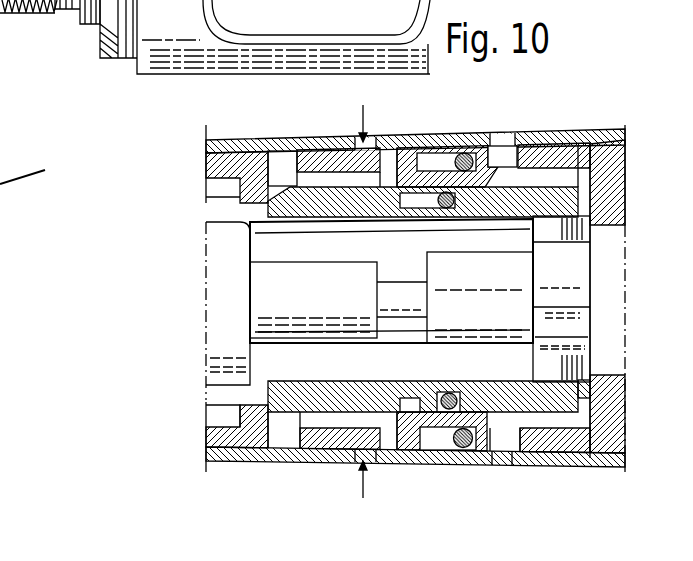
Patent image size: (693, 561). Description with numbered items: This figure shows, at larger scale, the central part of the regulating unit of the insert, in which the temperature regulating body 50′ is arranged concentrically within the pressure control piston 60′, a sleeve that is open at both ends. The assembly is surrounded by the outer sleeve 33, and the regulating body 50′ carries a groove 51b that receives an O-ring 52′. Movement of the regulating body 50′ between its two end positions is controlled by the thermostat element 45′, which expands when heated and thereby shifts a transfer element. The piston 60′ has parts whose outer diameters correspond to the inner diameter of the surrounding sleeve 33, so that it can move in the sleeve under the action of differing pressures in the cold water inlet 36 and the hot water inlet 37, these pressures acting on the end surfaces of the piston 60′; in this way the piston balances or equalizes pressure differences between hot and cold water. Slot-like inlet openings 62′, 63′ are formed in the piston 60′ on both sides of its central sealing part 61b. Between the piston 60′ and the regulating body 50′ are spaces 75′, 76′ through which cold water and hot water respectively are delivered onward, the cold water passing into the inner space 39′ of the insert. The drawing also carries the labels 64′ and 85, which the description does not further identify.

The lower housing wall 33 is at (204, 461).
The opening 36 is at (503, 147).
The opening 37 is at (360, 140).
The inner space 39′ is at (415, 254).
The thermostat element 45′ is at (223, 243).
The temperature regulating body 50′ is at (304, 149).
The groove 51b is at (418, 404).
The O-ring 52′ is at (442, 392).
The pressure control piston 60′ is at (553, 146).
The central sealing part 61b is at (462, 397).
The slot-like inlet opening 62′ is at (540, 458).
The slot-like inlet opening 63′ is at (388, 165).
The member 64′ is at (22, 211).
The space 75′ is at (603, 400).
The space 76′ is at (323, 426).
The spring washer 85 is at (600, 370).